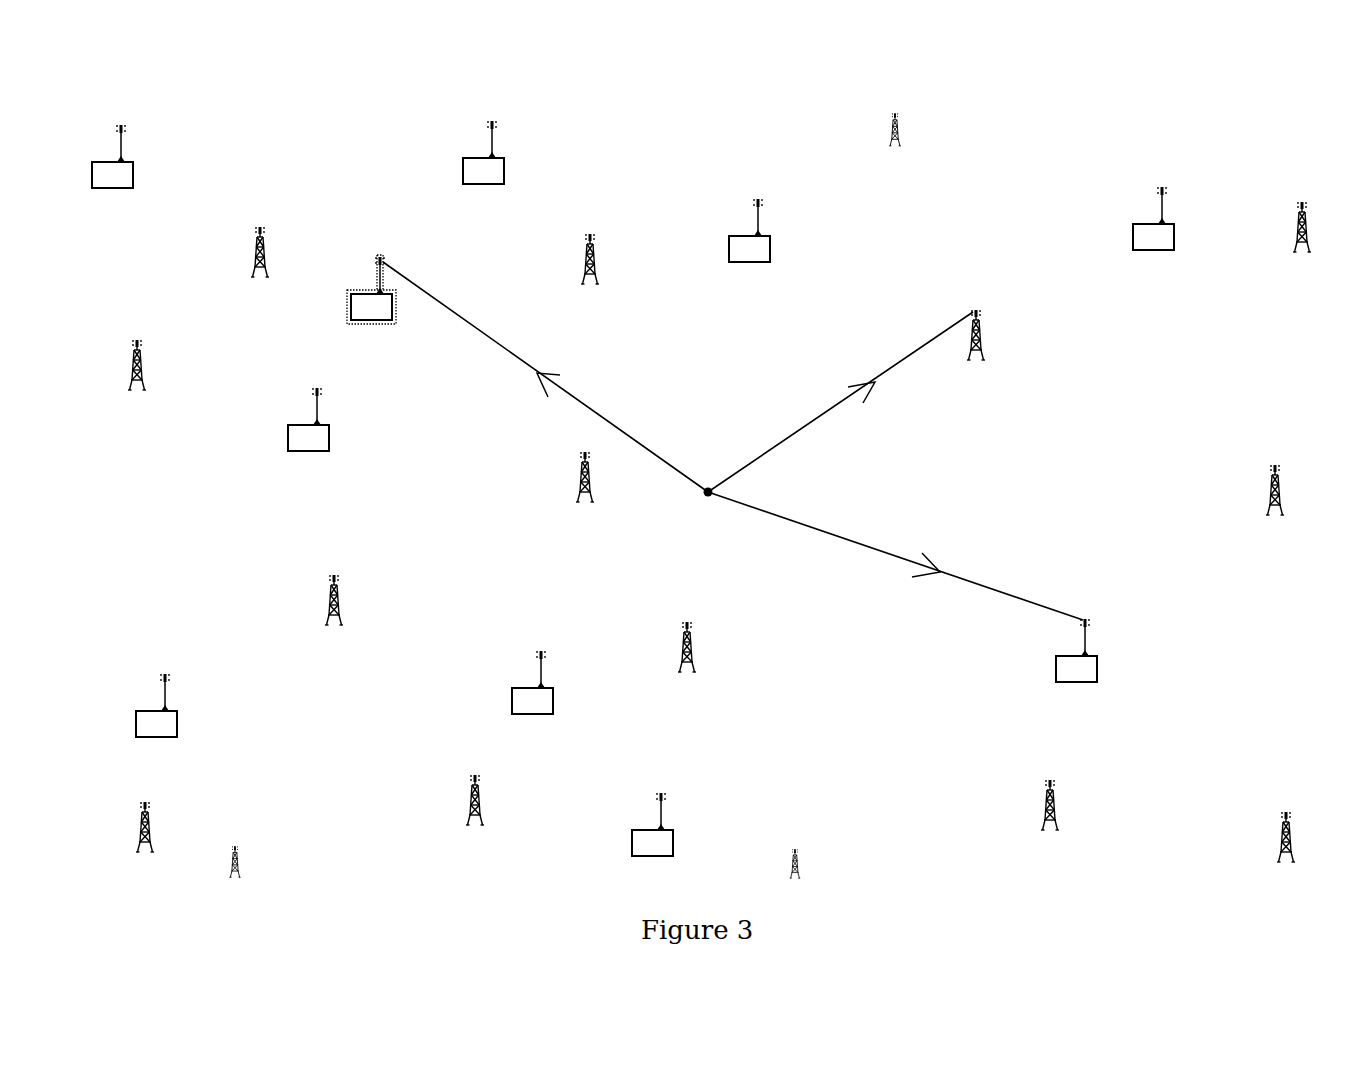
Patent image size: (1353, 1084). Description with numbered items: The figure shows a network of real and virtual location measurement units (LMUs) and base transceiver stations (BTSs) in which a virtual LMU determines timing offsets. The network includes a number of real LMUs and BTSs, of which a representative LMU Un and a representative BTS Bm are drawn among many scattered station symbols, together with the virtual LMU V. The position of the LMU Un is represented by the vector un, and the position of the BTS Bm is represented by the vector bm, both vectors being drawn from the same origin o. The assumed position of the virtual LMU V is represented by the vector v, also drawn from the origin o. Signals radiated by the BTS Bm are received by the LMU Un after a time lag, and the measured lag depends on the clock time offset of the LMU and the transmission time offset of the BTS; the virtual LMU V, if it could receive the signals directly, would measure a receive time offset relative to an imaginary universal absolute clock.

The virtual LMU V is at (364, 258).
The BTS Bm is at (1004, 300).
The LMU Un is at (1117, 628).
The origin o is at (711, 466).
The vector v is at (545, 377).
The vector bm is at (840, 398).
The vector un is at (895, 551).